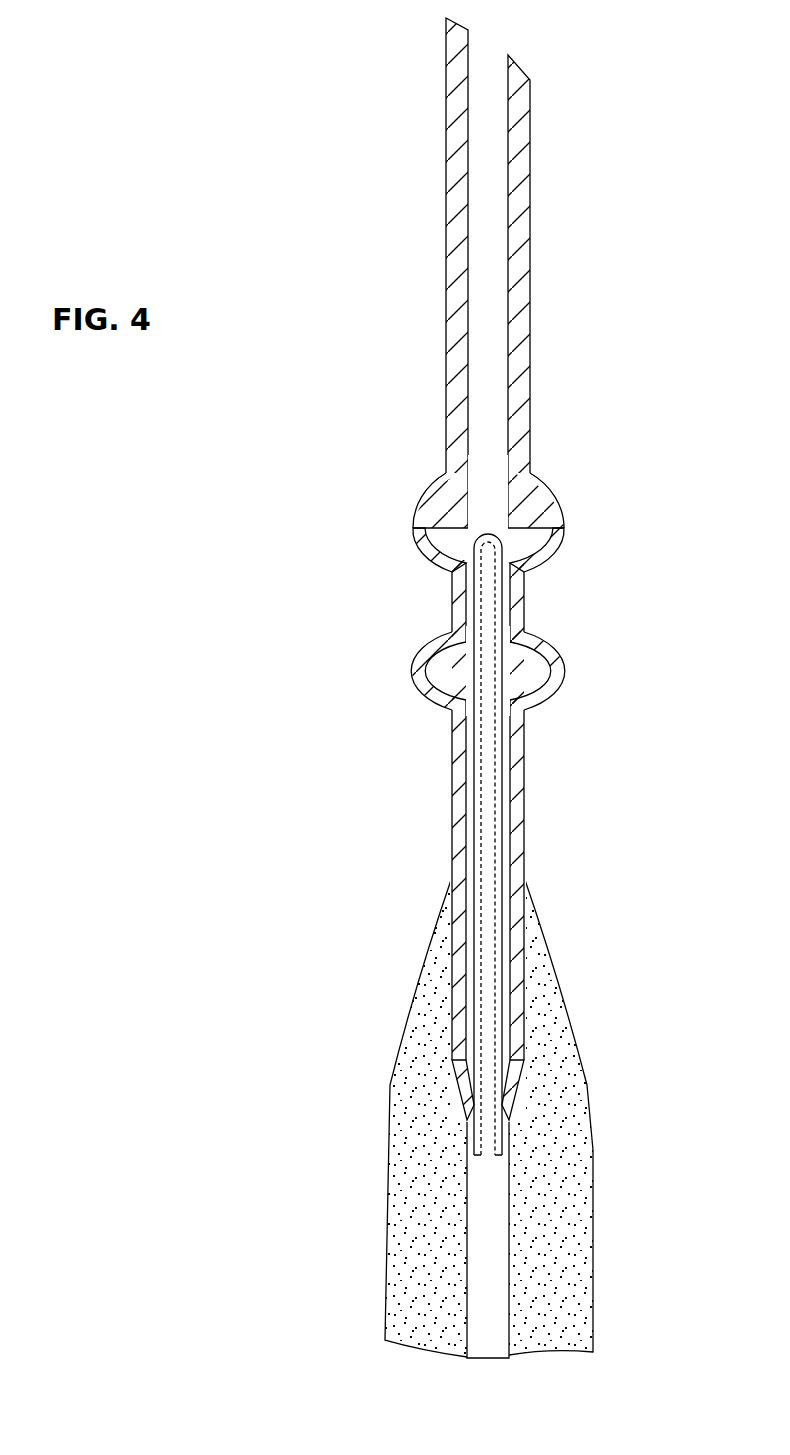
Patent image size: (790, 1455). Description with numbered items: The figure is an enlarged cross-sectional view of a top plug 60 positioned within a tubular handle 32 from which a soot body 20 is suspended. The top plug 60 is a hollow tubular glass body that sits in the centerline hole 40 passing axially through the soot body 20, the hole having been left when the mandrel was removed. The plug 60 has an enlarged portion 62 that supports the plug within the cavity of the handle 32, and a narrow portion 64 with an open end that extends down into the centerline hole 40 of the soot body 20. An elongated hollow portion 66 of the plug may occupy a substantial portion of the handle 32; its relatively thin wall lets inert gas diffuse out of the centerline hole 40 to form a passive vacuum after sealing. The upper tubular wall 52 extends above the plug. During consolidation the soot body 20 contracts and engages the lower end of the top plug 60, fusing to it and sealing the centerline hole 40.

The outer sheath tube 52 is at (518, 243).
The top plug 60 is at (500, 670).
The handle 32 is at (453, 827).
The elongated hollow portion 66 is at (500, 822).
The enlarged portion 62 is at (503, 1088).
The narrow portion 64 is at (500, 1137).
The soot body 20 is at (557, 1238).
The centerline hole 40 is at (492, 1277).